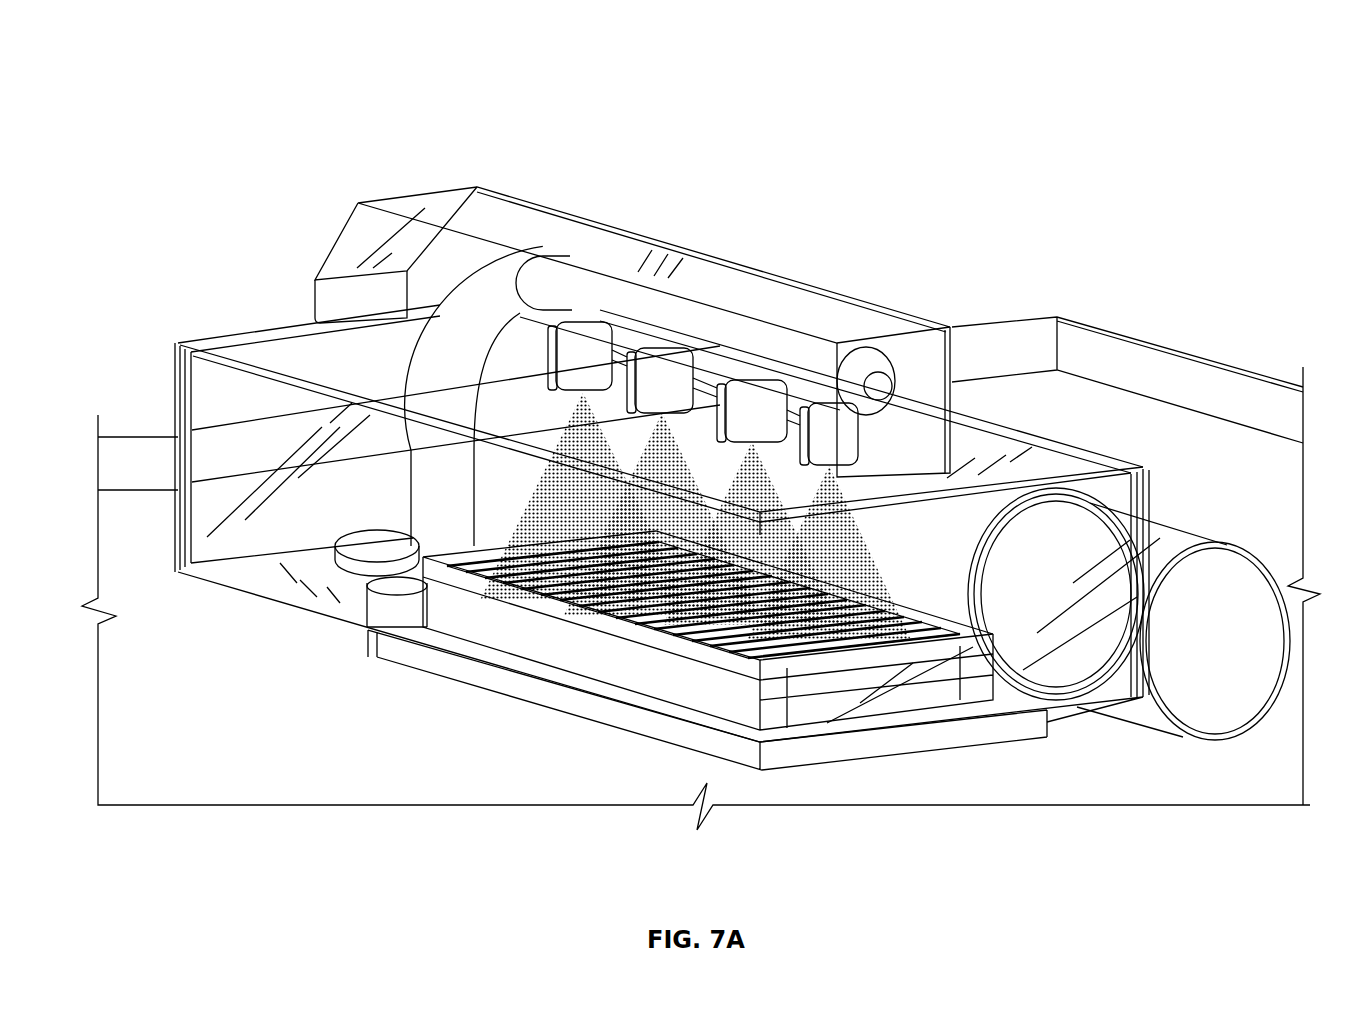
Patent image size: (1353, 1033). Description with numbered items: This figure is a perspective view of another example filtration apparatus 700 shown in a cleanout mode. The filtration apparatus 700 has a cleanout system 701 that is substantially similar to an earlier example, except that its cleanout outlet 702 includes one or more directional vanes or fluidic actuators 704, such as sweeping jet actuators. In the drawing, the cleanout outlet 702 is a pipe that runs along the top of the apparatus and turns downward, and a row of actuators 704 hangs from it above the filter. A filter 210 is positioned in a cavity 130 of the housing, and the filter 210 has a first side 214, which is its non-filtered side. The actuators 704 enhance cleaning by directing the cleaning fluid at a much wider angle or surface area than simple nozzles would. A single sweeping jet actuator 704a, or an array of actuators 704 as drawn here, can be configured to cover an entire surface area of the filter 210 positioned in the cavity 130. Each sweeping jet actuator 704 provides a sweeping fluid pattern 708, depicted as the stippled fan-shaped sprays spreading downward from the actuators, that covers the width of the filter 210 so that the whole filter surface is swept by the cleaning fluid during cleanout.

The filtration apparatus 700 is at (232, 62).
The cleanout system 701 is at (646, 208).
The cleanout outlet 702 is at (520, 410).
The fluidic actuators 704 is at (620, 320).
The sweeping jet actuator 704a is at (757, 412).
The cavity 130 is at (318, 534).
The first side 214 is at (690, 628).
The sweeping fluid pattern 708 is at (855, 645).
The filter 210 is at (913, 670).